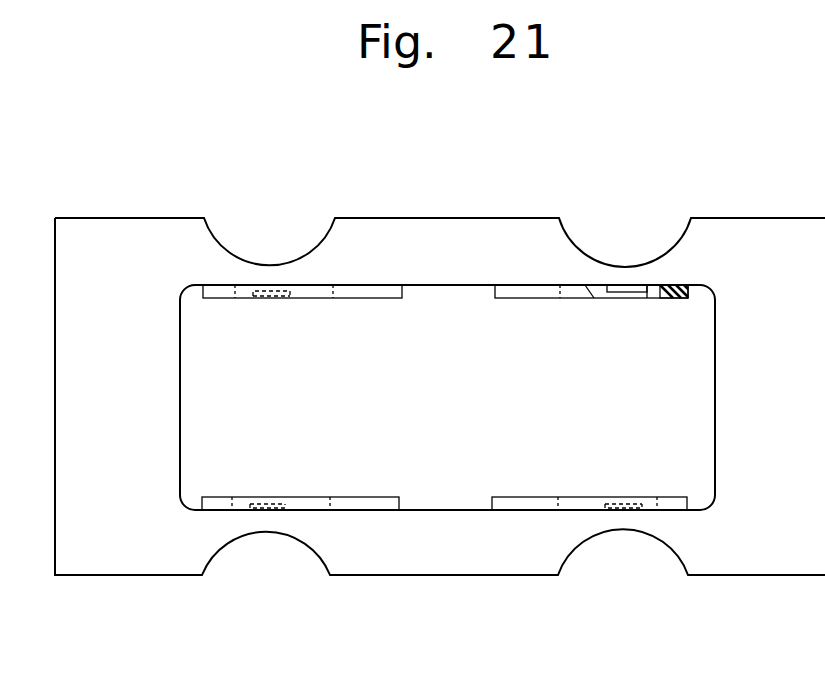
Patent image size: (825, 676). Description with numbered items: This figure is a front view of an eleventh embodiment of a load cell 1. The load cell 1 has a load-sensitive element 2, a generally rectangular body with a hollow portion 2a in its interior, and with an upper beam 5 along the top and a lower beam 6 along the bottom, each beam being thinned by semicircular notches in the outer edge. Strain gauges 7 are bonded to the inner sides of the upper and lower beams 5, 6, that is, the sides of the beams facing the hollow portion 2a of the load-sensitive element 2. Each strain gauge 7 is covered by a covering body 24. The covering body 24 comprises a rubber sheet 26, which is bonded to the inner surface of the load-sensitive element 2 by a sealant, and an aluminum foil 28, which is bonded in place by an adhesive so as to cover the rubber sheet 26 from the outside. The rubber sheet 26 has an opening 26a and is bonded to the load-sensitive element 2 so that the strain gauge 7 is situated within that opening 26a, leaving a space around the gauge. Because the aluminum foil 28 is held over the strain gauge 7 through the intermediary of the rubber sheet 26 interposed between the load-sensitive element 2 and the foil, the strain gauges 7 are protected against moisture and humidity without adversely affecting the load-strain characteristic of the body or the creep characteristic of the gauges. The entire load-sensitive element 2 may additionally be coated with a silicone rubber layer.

The load cell 1 is at (133, 216).
The load-sensitive element 2 is at (780, 236).
The hollow portion 2a is at (439, 495).
The upper beam 5 is at (452, 232).
The lower beam 6 is at (514, 576).
The strain gauge 7 is at (270, 299).
The covering body 24 is at (347, 300).
The rubber sheet 26 is at (678, 299).
The opening 26a is at (633, 299).
The aluminum foil 28 is at (648, 299).